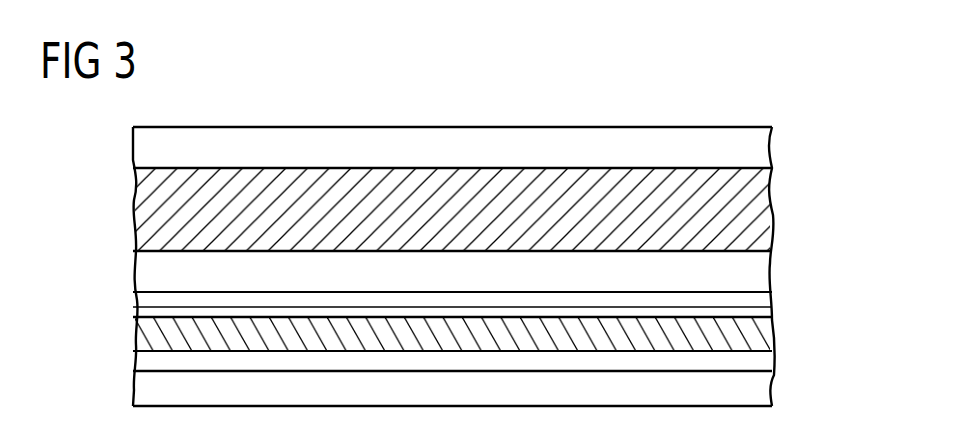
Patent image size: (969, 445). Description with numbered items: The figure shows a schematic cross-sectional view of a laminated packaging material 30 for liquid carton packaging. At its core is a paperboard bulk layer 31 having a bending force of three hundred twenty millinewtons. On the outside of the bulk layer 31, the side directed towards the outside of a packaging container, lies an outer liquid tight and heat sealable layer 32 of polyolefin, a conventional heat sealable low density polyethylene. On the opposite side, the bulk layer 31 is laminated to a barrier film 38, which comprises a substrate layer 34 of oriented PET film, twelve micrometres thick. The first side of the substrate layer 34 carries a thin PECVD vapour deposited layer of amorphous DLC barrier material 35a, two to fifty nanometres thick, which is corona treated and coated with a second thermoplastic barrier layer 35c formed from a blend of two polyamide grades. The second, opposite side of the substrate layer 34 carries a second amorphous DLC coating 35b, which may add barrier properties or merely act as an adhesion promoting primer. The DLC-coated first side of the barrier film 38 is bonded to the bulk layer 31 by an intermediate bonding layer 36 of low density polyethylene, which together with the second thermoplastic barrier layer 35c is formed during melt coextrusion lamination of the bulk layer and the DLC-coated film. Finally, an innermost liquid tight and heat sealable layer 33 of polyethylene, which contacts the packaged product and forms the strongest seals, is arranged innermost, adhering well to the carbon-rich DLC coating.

The laminated packaging material 30 is at (406, 264).
The paperboard bulk layer 31 is at (755, 203).
The outer liquid tight and heat sealable layer 32 is at (755, 144).
The innermost liquid tight and heat sealable layer 33 is at (755, 393).
The substrate layer 34 is at (752, 330).
The vapour deposited layer of amorphous DLC barrier material 35a is at (755, 312).
The second amorphous DLC coating 35b is at (755, 362).
The second thermoplastic barrier layer 35c is at (755, 299).
The intermediate bonding layer 36 is at (752, 263).
The barrier film 38 is at (128, 292).